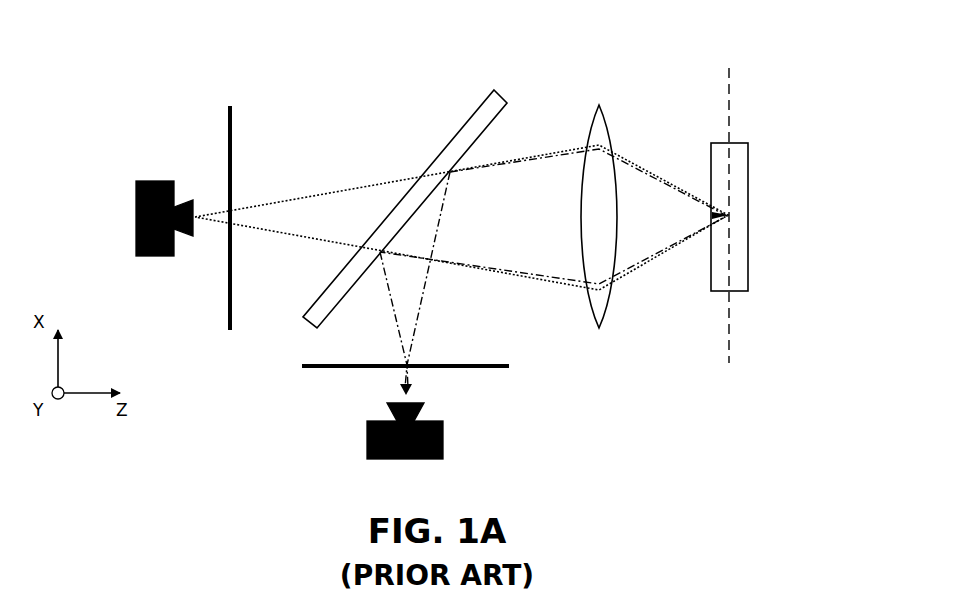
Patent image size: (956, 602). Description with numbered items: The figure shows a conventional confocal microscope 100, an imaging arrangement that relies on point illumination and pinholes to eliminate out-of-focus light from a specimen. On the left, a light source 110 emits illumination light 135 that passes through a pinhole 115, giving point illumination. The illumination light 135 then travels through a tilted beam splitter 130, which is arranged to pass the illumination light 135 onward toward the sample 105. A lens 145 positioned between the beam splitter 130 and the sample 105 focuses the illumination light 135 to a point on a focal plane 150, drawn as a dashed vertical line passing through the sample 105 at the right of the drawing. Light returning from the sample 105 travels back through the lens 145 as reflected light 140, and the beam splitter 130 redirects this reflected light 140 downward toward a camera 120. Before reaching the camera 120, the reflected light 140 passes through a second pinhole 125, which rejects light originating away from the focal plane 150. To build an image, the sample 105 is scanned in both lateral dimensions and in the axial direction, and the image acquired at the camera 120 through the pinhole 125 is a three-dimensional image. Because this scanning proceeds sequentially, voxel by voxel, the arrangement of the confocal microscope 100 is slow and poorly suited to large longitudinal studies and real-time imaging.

The conventional confocal microscope 100 is at (132, 51).
The sample 105 is at (748, 165).
The light source 110 is at (157, 180).
The pinhole 115 is at (241, 210).
The camera 120 is at (443, 440).
The pinhole 125 is at (417, 357).
The beam splitter 130 is at (472, 113).
The illumination light 135 is at (322, 248).
The reflected light 140 is at (392, 308).
The lens 145 is at (605, 125).
The focal plane 150 is at (729, 355).